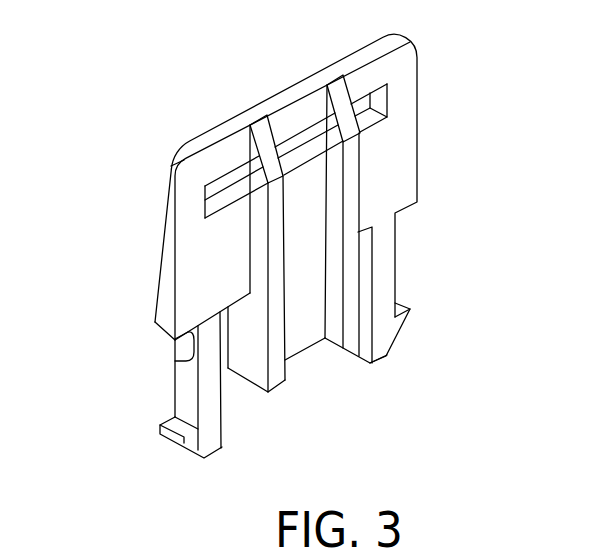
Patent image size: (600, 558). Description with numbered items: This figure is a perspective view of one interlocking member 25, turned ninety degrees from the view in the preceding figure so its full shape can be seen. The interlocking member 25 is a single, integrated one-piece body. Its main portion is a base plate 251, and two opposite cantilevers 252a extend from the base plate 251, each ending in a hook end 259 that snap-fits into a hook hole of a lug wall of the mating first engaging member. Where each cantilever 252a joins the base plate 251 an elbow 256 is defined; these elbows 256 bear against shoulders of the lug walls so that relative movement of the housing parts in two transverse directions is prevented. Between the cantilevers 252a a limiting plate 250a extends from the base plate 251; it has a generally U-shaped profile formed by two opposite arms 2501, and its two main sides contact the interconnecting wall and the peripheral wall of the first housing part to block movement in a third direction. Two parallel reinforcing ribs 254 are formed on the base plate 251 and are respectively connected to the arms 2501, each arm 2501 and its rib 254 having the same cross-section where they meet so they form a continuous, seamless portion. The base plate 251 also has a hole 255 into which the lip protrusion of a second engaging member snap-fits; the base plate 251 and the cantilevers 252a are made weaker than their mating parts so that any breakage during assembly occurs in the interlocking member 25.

The interlocking member 25 is at (222, 92).
The base plate 251 is at (163, 254).
The reinforcing rib 254 is at (262, 188).
The hole 255 is at (370, 115).
The elbow 256 is at (182, 362).
The cantilever 252a is at (187, 390).
The hook end 259 is at (187, 442).
The arm 2501 is at (277, 372).
The limiting plate 250a is at (298, 330).